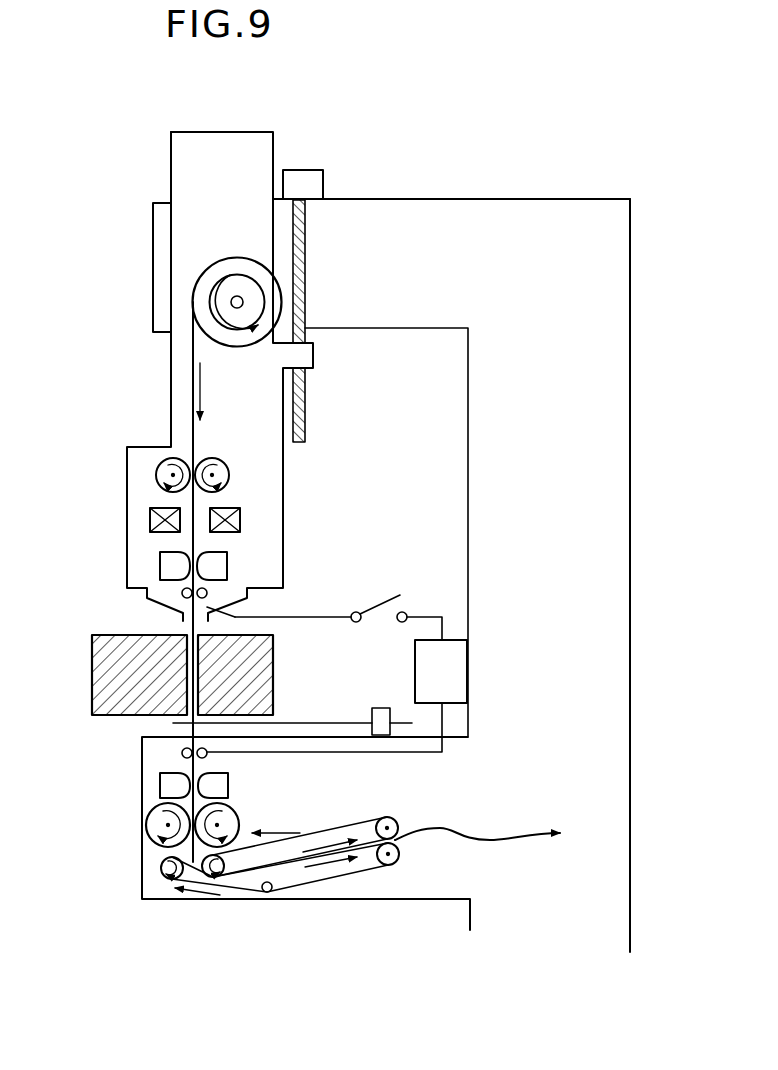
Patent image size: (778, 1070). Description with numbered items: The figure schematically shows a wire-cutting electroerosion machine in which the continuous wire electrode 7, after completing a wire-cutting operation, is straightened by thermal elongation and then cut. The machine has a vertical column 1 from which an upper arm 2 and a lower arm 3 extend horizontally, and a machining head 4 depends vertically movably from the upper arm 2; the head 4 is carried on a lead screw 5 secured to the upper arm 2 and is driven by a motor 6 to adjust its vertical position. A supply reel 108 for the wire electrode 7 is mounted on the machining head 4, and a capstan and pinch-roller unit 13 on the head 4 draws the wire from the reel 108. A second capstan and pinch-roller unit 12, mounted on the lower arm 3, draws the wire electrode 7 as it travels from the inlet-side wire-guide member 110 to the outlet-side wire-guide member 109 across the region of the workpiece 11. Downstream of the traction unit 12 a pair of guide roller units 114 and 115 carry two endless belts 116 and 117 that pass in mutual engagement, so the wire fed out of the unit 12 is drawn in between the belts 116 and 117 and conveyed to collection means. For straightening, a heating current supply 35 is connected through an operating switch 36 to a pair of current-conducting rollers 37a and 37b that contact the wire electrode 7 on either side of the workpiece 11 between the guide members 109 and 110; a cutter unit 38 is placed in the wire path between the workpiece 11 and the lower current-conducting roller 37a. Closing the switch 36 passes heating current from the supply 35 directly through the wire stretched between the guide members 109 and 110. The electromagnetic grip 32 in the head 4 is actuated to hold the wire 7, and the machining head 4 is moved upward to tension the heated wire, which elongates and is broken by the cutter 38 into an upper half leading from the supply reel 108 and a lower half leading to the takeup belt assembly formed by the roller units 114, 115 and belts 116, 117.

The vertical column 1 is at (631, 508).
The upper arm 2 is at (388, 201).
The lower arm 3 is at (406, 898).
The machining head 4 is at (284, 470).
The lead screw 5 is at (306, 398).
The motor 6 is at (324, 174).
The wire electrode 7 is at (193, 378).
The workpiece 11 is at (92, 664).
The capstan and pinch-roller unit 12 is at (146, 826).
The capstan and pinch-roller unit 13 is at (157, 474).
The magnetic grip 32 is at (150, 517).
The heating current supply 35 is at (457, 666).
The operating switch 36 is at (395, 596).
The lower current-conducting roller 37a is at (182, 753).
The upper current-conducting roller 37b is at (177, 603).
The cutter unit 38 is at (328, 723).
The supply reel 108 is at (193, 298).
The wire-guide member 109 is at (160, 786).
The wire-guide member 110 is at (228, 560).
The guide roller unit 114 is at (158, 880).
The guide roller unit 115 is at (399, 858).
The endless belt 116 is at (340, 820).
The endless belt 117 is at (345, 880).